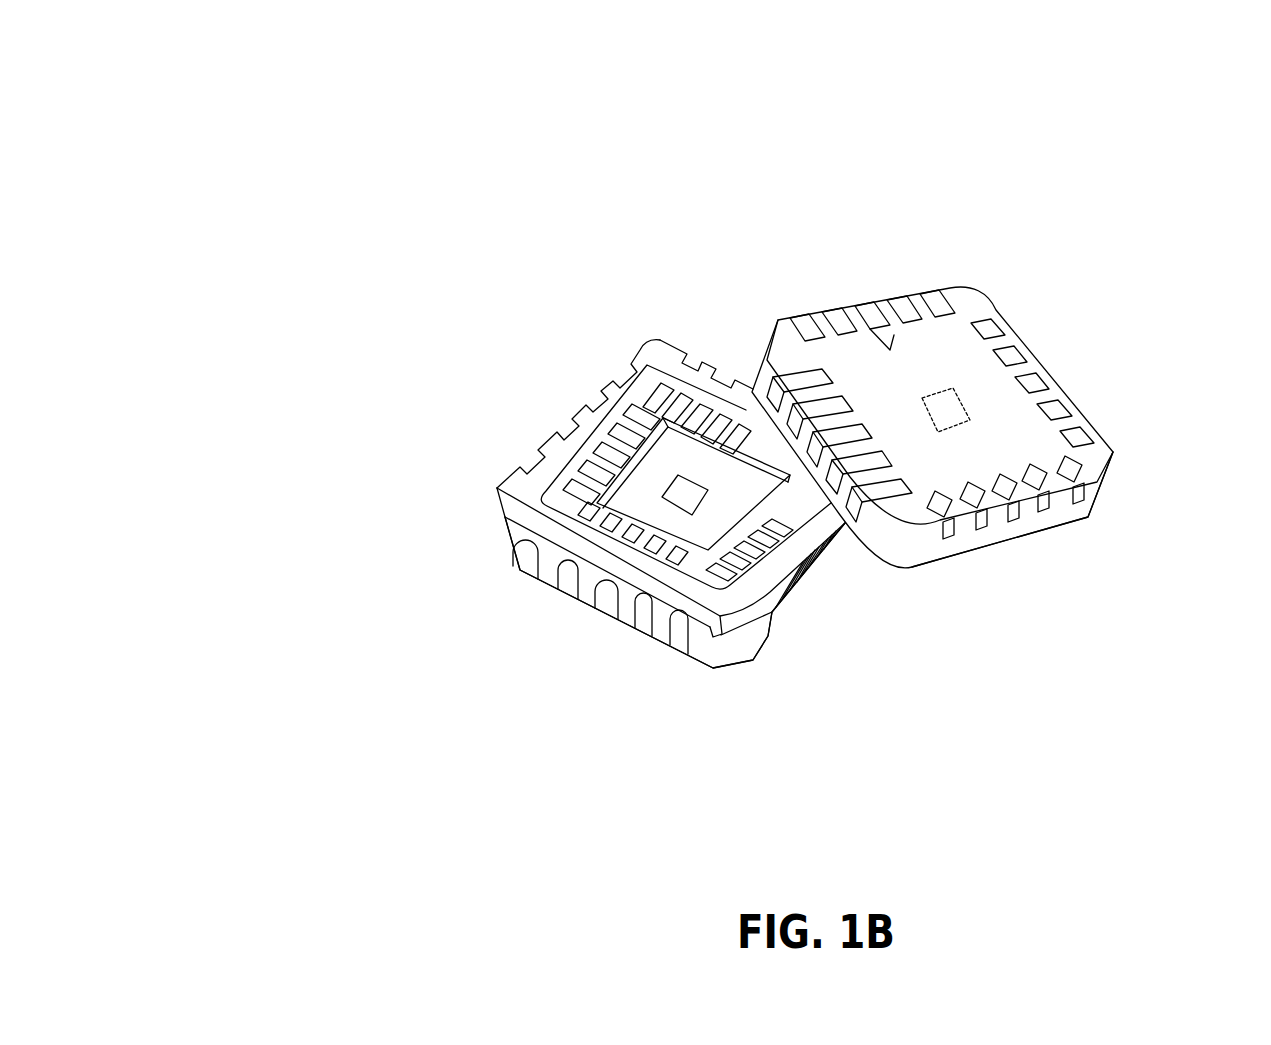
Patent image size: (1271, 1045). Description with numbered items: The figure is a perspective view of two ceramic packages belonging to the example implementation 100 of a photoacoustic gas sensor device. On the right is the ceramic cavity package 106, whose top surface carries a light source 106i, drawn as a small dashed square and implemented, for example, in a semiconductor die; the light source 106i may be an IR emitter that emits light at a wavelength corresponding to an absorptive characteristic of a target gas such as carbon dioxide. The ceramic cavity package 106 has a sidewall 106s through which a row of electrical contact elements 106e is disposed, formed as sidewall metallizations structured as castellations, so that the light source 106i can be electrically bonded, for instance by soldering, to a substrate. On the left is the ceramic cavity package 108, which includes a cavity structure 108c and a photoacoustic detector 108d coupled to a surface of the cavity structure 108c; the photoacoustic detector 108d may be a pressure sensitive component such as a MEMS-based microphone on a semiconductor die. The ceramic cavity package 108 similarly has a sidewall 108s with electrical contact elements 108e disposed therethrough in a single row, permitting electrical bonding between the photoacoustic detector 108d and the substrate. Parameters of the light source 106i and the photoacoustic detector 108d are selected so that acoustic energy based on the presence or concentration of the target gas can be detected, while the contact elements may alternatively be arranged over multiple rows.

The example implementation 100 is at (283, 50).
The ceramic cavity package 106 is at (888, 300).
The light source 106i is at (952, 406).
The electrical contact elements 106e is at (1020, 517).
The sidewall 106s is at (1070, 513).
The ceramic cavity package 108 is at (648, 335).
The photoacoustic detector 108d is at (667, 494).
The cavity structure 108c is at (623, 505).
The sidewall 108s is at (758, 618).
The electrical contact elements 108e is at (813, 562).